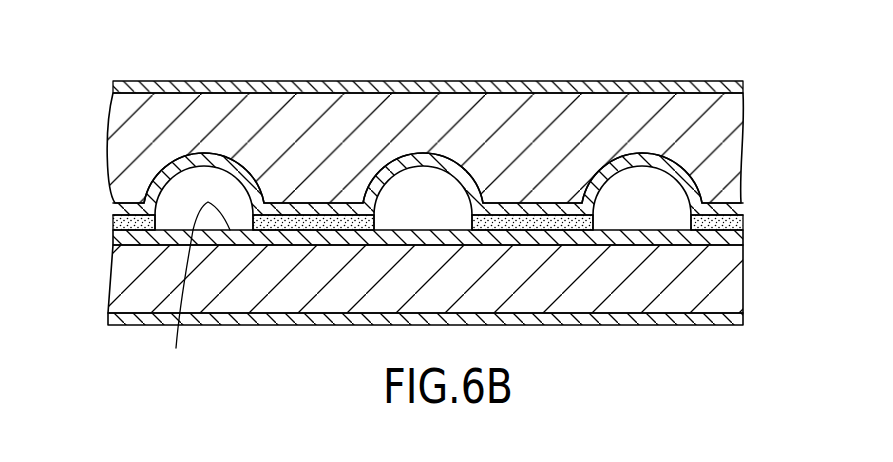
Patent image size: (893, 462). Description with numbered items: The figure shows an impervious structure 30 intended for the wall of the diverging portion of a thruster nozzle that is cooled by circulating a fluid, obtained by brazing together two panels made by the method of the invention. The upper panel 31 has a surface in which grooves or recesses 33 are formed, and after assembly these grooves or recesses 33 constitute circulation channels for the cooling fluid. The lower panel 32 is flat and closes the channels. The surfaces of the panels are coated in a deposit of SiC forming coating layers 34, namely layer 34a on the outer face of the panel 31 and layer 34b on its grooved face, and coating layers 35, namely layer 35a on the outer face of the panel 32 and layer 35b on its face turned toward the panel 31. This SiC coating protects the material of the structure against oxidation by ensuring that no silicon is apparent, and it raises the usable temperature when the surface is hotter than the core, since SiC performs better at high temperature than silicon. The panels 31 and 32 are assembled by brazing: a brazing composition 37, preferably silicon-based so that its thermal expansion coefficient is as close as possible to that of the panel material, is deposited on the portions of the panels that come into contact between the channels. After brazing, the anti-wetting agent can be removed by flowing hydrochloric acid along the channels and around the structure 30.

The structure 30 is at (409, 202).
The panel 31 is at (718, 137).
The panel 32 is at (703, 272).
The grooves or recesses 33 is at (186, 192).
The coating layers 34 is at (390, 120).
The coating layer 34a is at (326, 81).
The coating layer 34b is at (113, 212).
The coating layers 35 is at (195, 290).
The coating layer 35a is at (655, 320).
The coating layer 35b is at (113, 238).
The brazing composition 37 is at (113, 220).